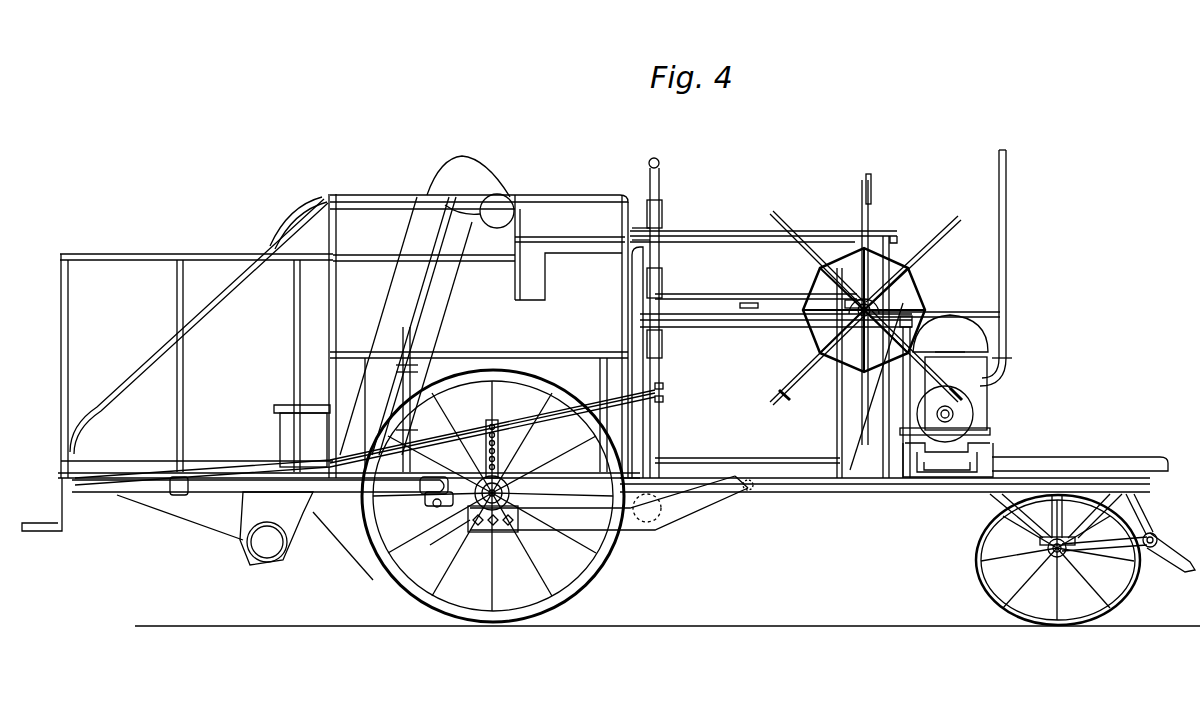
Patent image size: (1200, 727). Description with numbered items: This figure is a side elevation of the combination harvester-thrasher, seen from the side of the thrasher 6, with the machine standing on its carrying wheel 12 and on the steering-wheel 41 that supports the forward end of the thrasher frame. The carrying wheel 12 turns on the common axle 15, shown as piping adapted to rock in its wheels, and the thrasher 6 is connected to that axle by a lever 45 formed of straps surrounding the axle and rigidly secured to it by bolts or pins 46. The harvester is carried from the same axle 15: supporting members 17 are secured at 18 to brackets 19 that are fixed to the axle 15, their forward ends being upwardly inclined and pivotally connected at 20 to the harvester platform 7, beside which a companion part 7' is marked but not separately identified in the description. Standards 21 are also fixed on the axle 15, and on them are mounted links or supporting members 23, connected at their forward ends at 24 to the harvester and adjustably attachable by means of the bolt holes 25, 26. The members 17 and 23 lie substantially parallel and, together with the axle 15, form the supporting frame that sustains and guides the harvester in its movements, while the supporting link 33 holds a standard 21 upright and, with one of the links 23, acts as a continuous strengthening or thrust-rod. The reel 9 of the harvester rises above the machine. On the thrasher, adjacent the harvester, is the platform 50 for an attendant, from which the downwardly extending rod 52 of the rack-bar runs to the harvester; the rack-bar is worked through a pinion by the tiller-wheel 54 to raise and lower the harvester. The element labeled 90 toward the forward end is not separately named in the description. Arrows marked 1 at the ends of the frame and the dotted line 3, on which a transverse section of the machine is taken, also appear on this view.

The section line 1 is at (60, 478).
The dotted section line 3— 3 is at (690, 590).
The thrasher 6 is at (349, 336).
The platform 7 is at (894, 350).
The platform shelf 7' is at (935, 419).
The reel 9 is at (828, 360).
The carrying wheel 12 is at (583, 580).
The common axle 15 is at (515, 505).
The supporting members 17 is at (655, 553).
The securing point 18 is at (487, 532).
The brackets 19 is at (500, 532).
The pivotal connection 20 is at (752, 492).
The standards 21 is at (487, 421).
The links or supporting members 23 is at (492, 428).
The connection point 24 is at (664, 387).
The bolt holes 25 is at (496, 422).
The bolt holes 26 is at (664, 400).
The supporting link 33 is at (285, 458).
The lever 45 is at (444, 541).
The bolts or pins 46 is at (432, 503).
The platform 50 is at (563, 352).
The downwardly extending rod 52 is at (640, 290).
The tiller-wheel 54 is at (659, 188).
The engine 90 is at (990, 407).
The steering-wheel 41 is at (1128, 578).